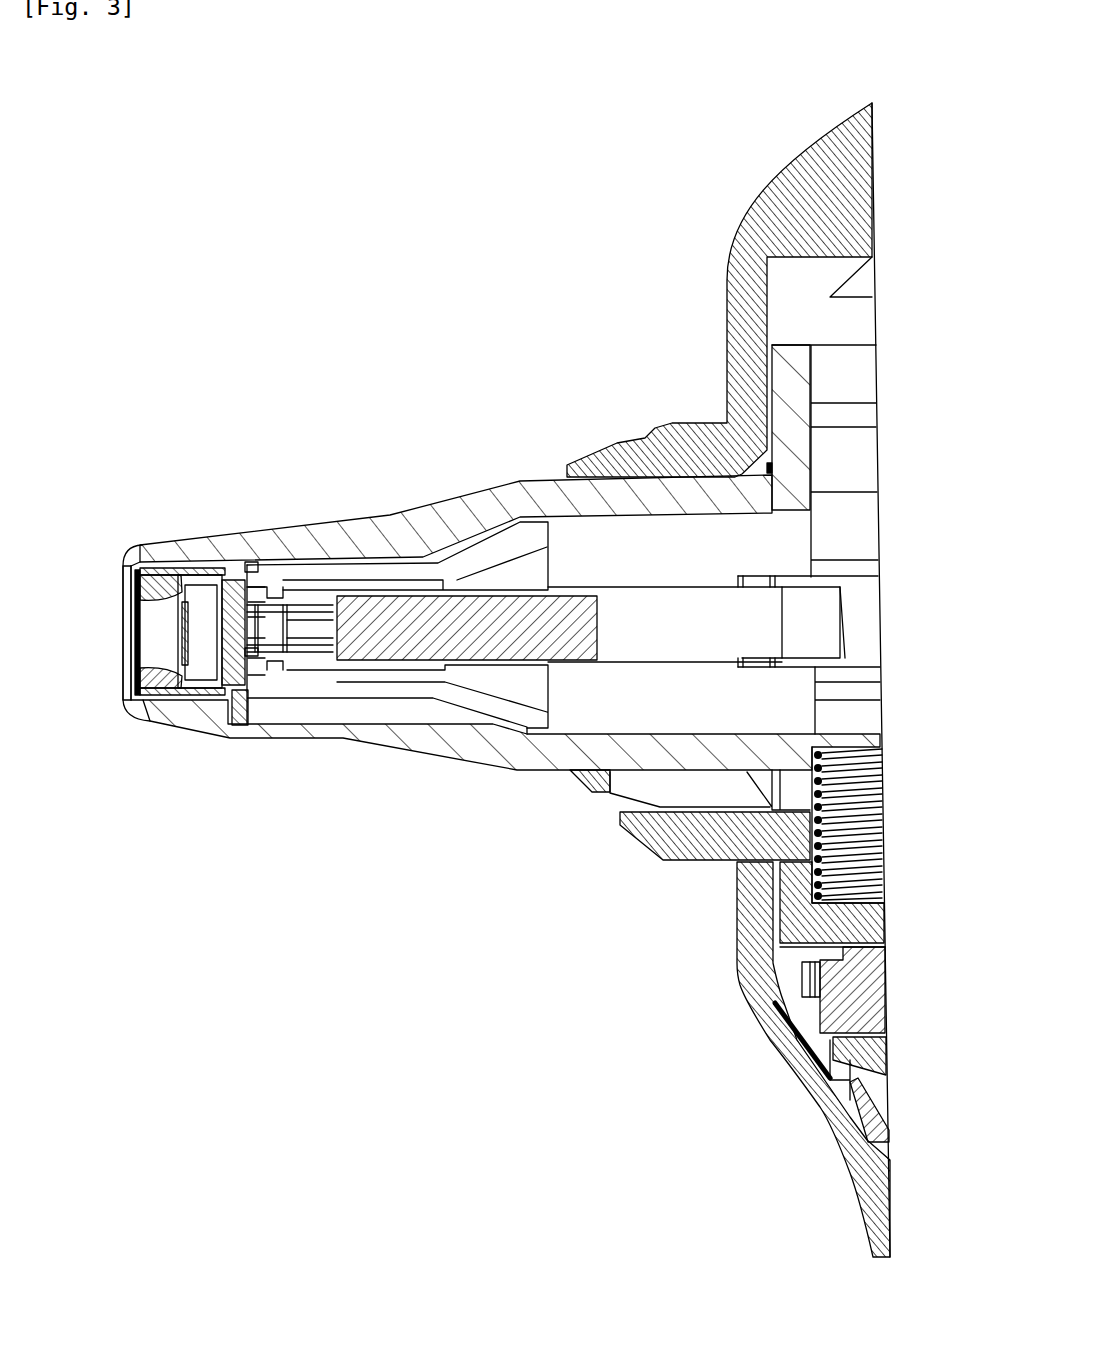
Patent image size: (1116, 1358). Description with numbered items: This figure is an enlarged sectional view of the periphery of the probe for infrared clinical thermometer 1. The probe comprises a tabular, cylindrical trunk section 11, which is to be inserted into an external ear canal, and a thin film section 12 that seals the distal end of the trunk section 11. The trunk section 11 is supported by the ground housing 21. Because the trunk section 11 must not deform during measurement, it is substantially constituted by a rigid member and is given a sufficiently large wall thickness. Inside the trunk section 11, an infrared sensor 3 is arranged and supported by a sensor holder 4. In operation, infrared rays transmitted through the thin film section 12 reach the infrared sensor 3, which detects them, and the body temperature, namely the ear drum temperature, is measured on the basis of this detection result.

The probe for infrared clinical thermometer 1 is at (364, 422).
The infrared sensor 3 is at (203, 574).
The sensor holder 4 is at (320, 573).
The trunk section 11 is at (299, 540).
The thin film section 12 is at (121, 599).
The ground housing 21 is at (731, 336).